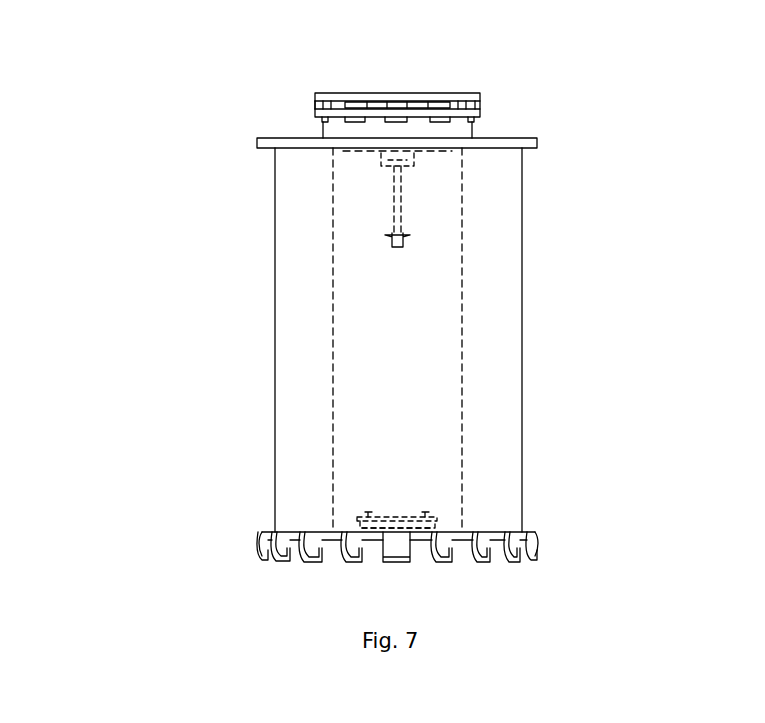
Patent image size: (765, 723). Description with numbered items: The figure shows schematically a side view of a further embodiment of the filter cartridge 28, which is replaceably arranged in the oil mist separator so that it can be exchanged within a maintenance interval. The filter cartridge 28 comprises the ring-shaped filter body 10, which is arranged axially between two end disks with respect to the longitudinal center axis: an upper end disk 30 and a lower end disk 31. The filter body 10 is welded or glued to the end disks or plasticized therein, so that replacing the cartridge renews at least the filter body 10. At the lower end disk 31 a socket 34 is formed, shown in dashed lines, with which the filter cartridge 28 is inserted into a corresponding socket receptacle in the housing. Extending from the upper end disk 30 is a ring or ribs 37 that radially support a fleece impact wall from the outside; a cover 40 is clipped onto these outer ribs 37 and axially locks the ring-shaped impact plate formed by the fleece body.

The filter cartridge 28 is at (195, 117).
The filter body 10 is at (505, 241).
The upper end disk 30 is at (532, 143).
The ring or ribs 37 is at (452, 130).
The cover 40 is at (465, 96).
The socket 34 is at (402, 514).
The lower end disk 31 is at (535, 535).